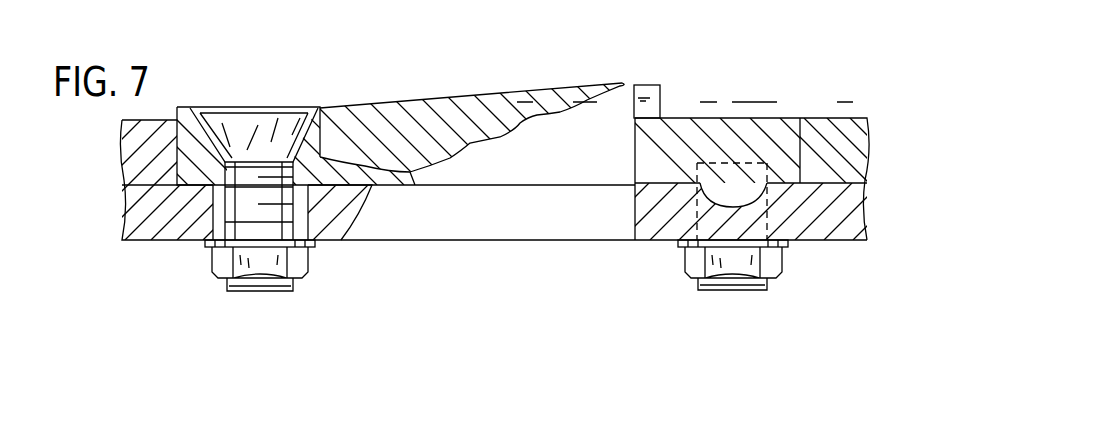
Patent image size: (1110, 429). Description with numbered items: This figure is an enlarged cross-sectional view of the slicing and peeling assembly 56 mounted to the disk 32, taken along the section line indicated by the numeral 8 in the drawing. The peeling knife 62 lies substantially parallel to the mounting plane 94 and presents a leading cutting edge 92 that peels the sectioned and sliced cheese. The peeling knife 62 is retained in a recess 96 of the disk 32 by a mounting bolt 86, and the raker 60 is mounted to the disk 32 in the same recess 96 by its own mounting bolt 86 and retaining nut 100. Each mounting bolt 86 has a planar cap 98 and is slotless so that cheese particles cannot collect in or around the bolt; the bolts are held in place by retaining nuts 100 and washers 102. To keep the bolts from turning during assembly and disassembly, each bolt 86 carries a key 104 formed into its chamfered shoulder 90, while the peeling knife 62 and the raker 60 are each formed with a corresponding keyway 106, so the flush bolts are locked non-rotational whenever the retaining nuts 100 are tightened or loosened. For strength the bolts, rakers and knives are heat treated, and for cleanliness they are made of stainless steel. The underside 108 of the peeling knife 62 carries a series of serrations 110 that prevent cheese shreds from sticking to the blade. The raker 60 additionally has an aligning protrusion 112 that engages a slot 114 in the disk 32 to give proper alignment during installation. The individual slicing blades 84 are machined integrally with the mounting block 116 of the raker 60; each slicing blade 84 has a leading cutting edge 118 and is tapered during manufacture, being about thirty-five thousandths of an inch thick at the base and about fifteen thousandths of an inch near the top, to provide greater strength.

The section line 8- 8 is at (528, 92).
The disk 32 is at (145, 190).
The slicing and peeling assembly 56 is at (430, 52).
The raker 60 is at (697, 104).
The peeling knife 62 is at (410, 144).
The slicing blade 84 is at (648, 92).
The mounting bolt 86 is at (259, 300).
The chamfered shoulder 90 is at (253, 127).
The leading cutting edge 92 is at (623, 83).
The mounting plane 94 is at (557, 172).
The recess 96 is at (190, 180).
The planar cap 98 is at (240, 92).
The retaining nut 100 is at (310, 263).
The washer 102 is at (316, 246).
The key 104 is at (320, 138).
The keyway 106 is at (417, 170).
The underside 108 is at (498, 158).
The serrations 110 is at (583, 103).
The aligning protrusion 112 is at (720, 192).
The slot 114 is at (733, 200).
The mounting block 116 is at (643, 167).
The leading cutting edge 118 is at (660, 94).